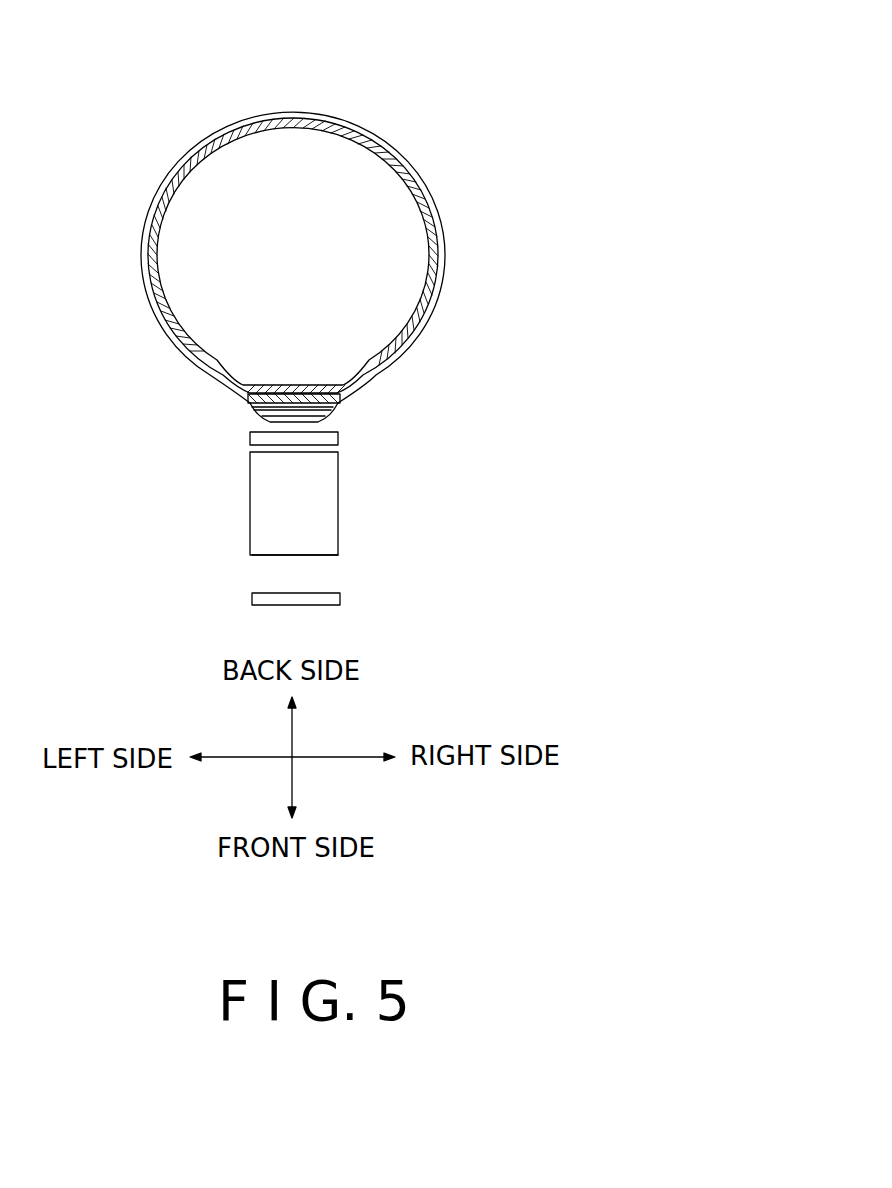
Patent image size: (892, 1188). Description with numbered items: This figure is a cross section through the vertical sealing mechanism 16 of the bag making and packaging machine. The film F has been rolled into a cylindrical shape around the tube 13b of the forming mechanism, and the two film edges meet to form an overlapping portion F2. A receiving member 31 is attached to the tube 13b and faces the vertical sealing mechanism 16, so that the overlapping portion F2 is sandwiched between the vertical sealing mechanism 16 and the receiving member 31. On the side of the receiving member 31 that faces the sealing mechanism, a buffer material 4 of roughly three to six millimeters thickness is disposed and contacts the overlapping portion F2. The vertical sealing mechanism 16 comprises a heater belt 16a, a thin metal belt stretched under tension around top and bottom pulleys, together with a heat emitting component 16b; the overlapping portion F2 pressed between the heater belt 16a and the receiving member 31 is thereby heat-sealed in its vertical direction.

The film F is at (325, 113).
The tube 13b is at (420, 175).
The receiving member 31 is at (290, 400).
The buffer material 4 is at (263, 410).
The overlapping portion F2 is at (314, 427).
The vertical sealing mechanism 16 is at (356, 500).
The heater belt 16a is at (258, 442).
The heat emitting component 16b is at (325, 550).